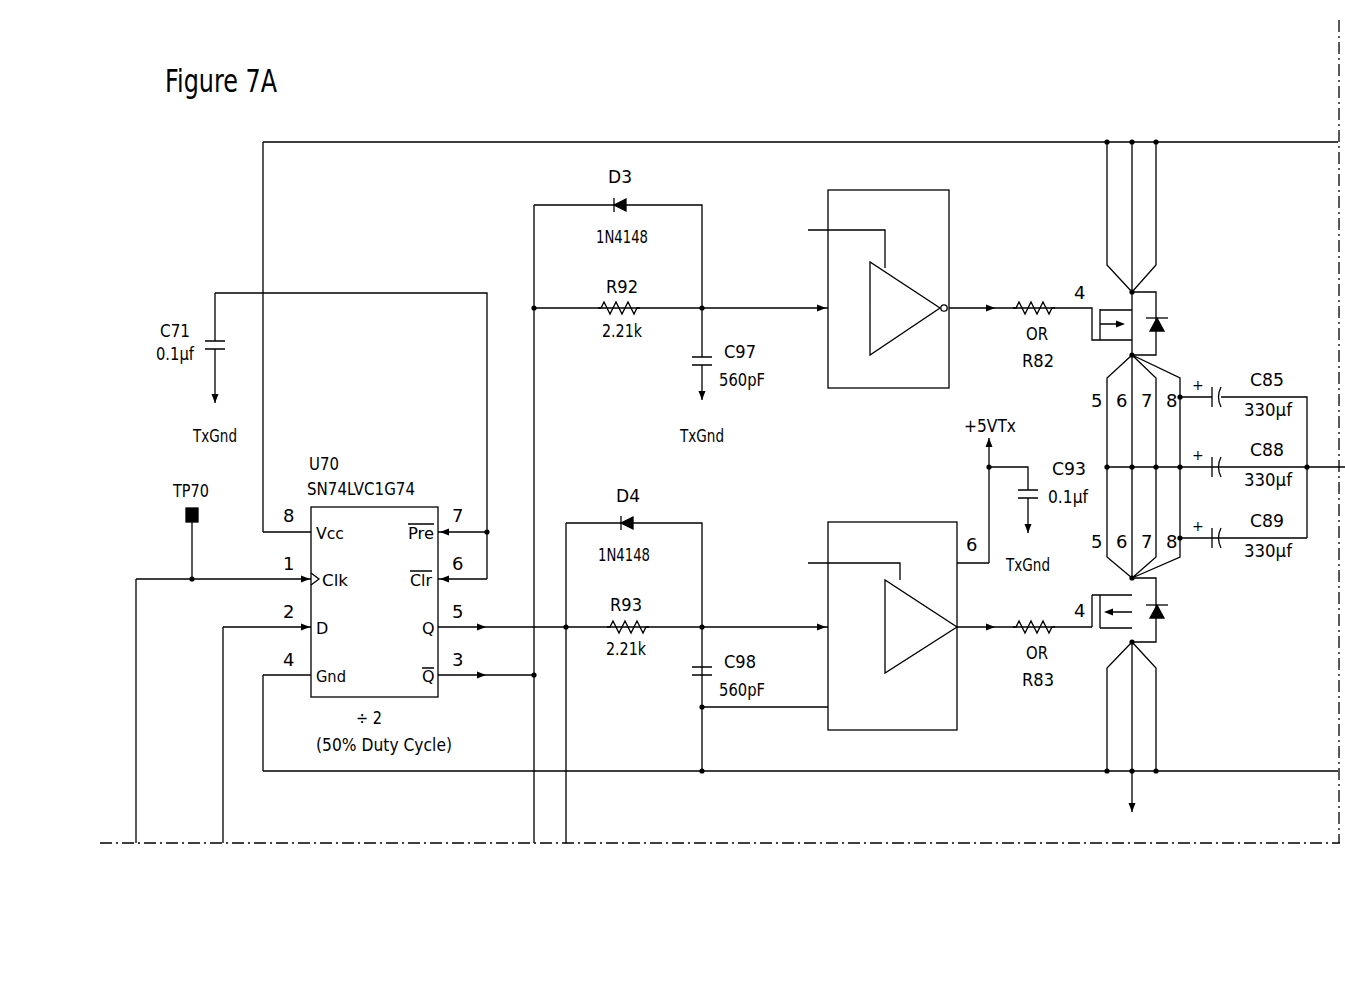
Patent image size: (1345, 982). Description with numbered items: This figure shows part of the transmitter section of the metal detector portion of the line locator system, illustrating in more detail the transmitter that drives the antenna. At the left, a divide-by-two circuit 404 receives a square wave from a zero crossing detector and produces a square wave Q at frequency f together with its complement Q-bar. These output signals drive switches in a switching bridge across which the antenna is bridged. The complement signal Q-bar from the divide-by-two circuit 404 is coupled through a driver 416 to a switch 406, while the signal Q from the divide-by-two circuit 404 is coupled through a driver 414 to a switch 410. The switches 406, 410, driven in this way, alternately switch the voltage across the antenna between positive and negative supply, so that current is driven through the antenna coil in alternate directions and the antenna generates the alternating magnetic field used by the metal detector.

The divide-by-2 404 is at (208, 658).
The switch 406 is at (1136, 288).
The switch 410 is at (1160, 632).
The driver 414 is at (773, 574).
The driver 416 is at (804, 393).